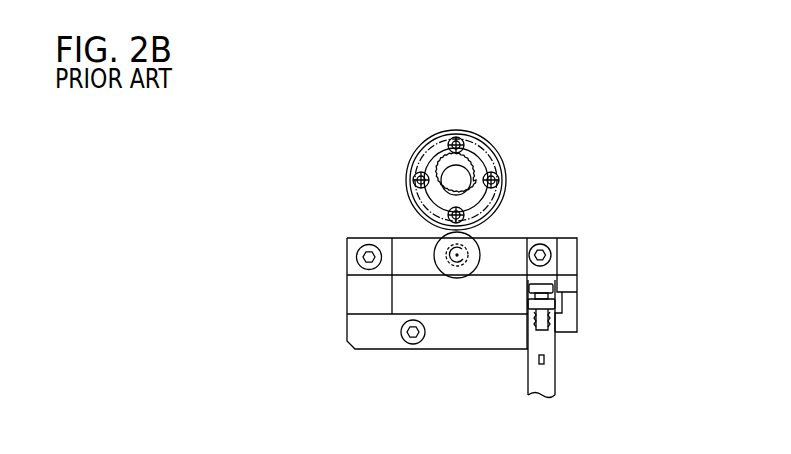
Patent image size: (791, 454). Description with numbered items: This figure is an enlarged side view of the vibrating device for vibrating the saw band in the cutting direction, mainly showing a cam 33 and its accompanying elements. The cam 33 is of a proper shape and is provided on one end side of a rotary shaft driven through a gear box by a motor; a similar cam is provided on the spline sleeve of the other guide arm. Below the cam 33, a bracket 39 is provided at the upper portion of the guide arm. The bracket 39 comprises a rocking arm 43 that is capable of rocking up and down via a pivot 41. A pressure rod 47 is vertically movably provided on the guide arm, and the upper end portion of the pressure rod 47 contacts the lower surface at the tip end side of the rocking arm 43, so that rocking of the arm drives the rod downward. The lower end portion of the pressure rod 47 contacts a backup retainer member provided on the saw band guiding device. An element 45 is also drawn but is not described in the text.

The cam 33 is at (480, 150).
The bracket 39 is at (356, 305).
The pivot 41 is at (362, 244).
The rocking arm 43 is at (510, 238).
The bearing 45 is at (440, 240).
The pressure rod 47 is at (548, 373).